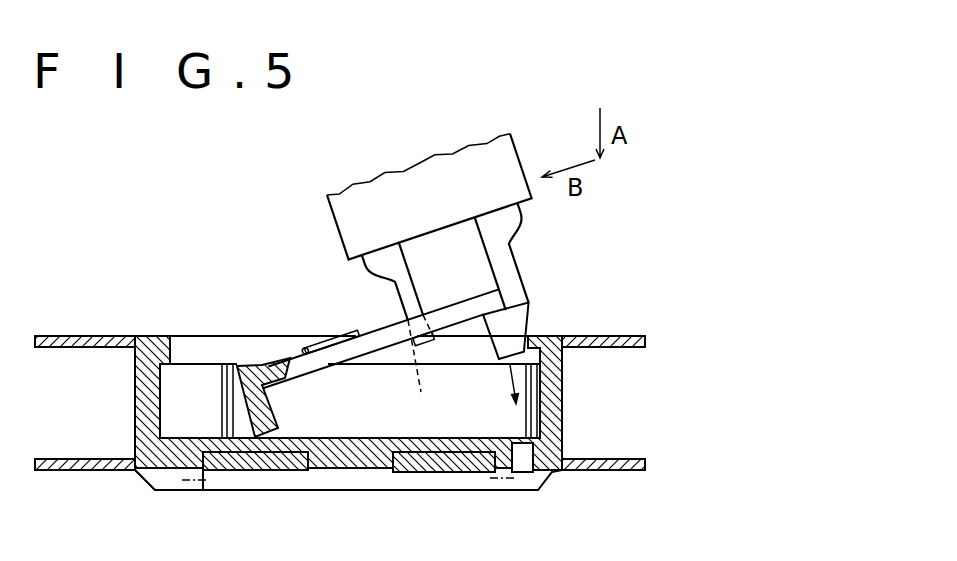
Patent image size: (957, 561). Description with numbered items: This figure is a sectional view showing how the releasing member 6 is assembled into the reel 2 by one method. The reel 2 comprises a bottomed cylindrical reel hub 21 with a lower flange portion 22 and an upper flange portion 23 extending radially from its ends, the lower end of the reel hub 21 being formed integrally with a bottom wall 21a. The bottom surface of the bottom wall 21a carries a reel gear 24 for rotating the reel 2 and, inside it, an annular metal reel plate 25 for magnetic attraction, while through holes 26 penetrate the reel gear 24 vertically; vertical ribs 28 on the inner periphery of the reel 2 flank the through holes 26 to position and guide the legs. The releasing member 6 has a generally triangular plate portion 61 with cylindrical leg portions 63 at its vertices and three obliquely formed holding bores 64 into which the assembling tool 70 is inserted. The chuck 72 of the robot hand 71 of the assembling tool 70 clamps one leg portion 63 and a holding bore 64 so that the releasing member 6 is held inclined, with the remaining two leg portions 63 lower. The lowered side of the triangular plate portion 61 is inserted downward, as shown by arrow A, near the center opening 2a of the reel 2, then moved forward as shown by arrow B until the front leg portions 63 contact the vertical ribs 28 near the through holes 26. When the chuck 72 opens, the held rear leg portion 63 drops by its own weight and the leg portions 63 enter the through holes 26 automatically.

The reel 2 is at (110, 326).
The center opening 2a is at (200, 344).
The releasing member 6 is at (361, 326).
The reel hub 21 is at (135, 405).
The bottom wall 21a is at (350, 437).
The lower flange portion 22 is at (60, 349).
The upper flange portion 23 is at (612, 459).
The reel gear 24 is at (180, 491).
The reel plate 25 is at (432, 473).
The through holes 26 is at (277, 471).
The vertical ribs 28 is at (222, 399).
The triangular plate portion 61 is at (304, 347).
The leg portions 63 is at (277, 410).
The holding bores 64 is at (431, 365).
The assembling tool 70 is at (397, 163).
The robot hand 71 is at (333, 212).
The chuck 72 is at (408, 275).